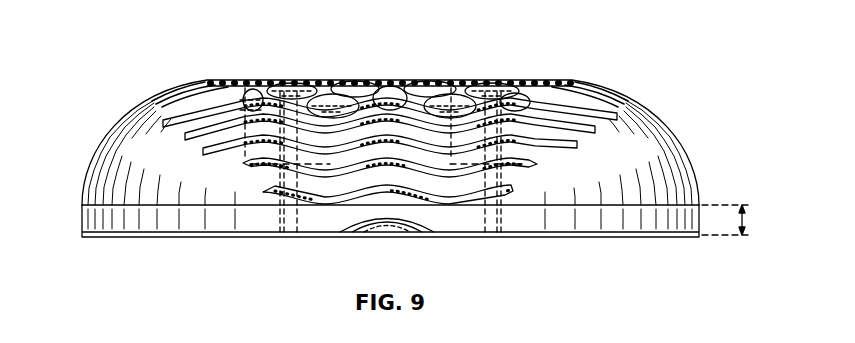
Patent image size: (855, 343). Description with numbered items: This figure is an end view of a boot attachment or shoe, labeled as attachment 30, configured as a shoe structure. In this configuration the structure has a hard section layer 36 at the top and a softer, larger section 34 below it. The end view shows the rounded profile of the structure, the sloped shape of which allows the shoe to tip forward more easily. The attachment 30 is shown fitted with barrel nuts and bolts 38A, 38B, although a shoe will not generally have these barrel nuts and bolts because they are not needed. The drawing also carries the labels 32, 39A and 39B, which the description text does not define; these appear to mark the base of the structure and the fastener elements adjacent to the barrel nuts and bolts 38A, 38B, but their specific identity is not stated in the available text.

The attachment 30 is at (625, 42).
The base plate 32 is at (81, 224).
The softer larger section 34 is at (137, 124).
The hard section layer 36 is at (745, 222).
The barrel nut and bolt 38A is at (464, 80).
The barrel nut and bolt 38B is at (314, 80).
The lobe 39A is at (492, 80).
The lobe 39B is at (290, 80).